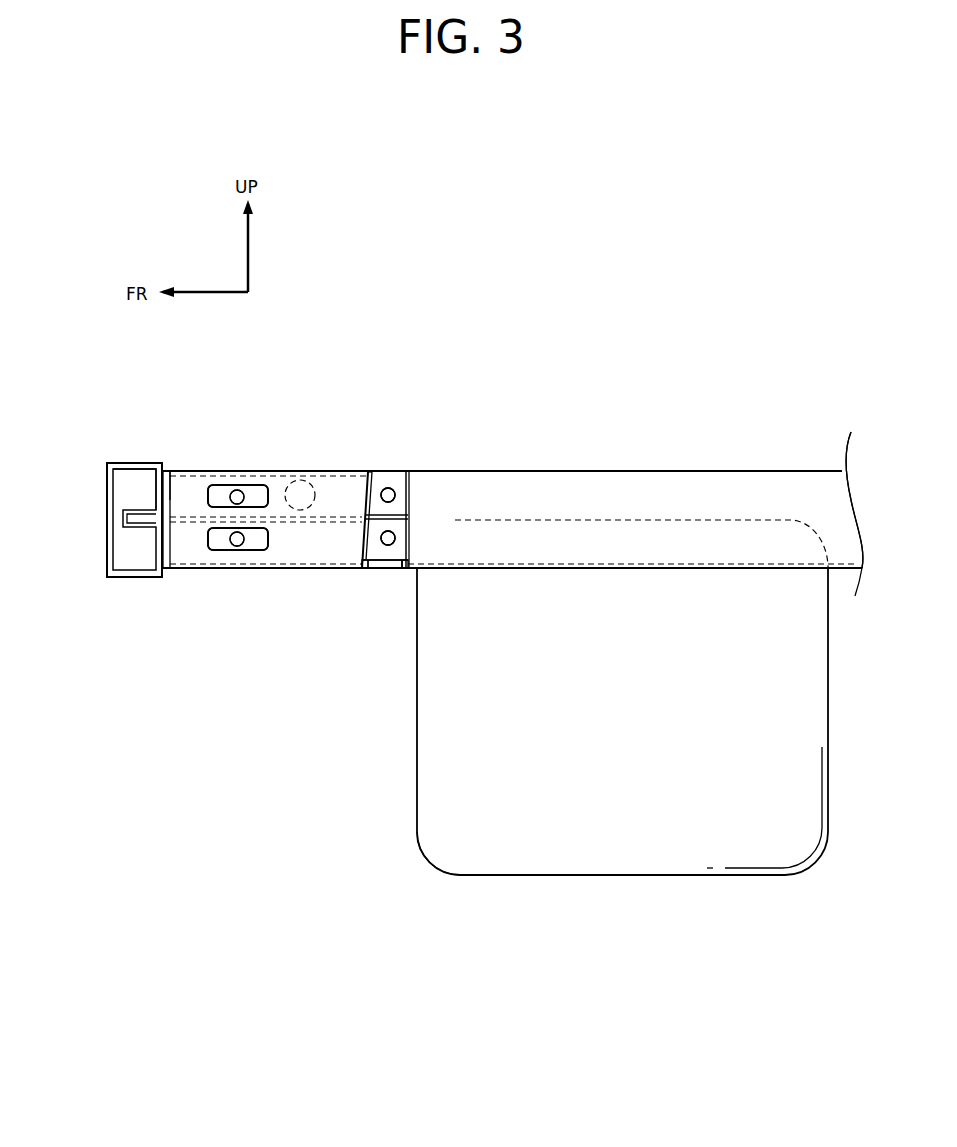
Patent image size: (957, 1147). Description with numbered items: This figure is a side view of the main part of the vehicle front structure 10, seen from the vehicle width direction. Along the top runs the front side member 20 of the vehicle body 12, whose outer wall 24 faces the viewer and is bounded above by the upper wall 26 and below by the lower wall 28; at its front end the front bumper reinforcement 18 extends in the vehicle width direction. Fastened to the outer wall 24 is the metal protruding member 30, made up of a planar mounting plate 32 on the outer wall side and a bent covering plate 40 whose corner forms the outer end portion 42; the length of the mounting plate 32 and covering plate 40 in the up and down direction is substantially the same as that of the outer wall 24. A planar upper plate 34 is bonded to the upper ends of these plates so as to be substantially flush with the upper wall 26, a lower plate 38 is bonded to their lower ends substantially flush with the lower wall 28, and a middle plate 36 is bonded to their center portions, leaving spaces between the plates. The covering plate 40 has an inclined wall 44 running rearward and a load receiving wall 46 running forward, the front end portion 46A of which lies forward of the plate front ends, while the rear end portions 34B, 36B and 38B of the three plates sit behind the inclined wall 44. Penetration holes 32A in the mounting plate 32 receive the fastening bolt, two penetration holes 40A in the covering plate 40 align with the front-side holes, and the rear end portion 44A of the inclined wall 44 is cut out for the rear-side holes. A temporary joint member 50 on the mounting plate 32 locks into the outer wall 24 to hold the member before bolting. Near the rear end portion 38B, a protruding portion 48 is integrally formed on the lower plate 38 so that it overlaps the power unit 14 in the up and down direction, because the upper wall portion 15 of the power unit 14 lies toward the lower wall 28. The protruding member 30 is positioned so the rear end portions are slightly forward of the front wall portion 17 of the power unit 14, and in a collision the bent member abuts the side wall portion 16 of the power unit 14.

The vehicle front structure 10 is at (312, 438).
The vehicle body 12 is at (98, 480).
The power unit 14 is at (406, 760).
The upper wall portion 15 is at (685, 518).
The side wall portion 16 is at (571, 840).
The front wall portion 17 is at (411, 808).
The front bumper reinforcement 18 is at (128, 456).
The front side member 20 is at (598, 466).
The outer wall 24 is at (748, 487).
The upper wall 26 is at (532, 469).
The lower wall 28 is at (842, 572).
The protruding member 30 is at (201, 462).
The mounting plate 32 is at (418, 476).
The penetration hole 32A is at (238, 486).
The upper plate 34 is at (388, 470).
The rear end portion 34B is at (411, 470).
The middle plate 36 is at (411, 530).
The rear end portion 36B is at (411, 500).
The lower plate 38 is at (368, 570).
The rear end portion 38B is at (416, 569).
The covering plate 40 is at (284, 570).
The penetration hole 40A is at (258, 486).
The outer end portion 42 is at (246, 563).
The inclined wall 44 is at (312, 573).
The rear end portion 44A is at (375, 470).
The load receiving wall 46 is at (181, 570).
The front end portion 46A is at (166, 478).
The protruding portion 48 is at (392, 572).
The temporary joint member 50 is at (318, 483).